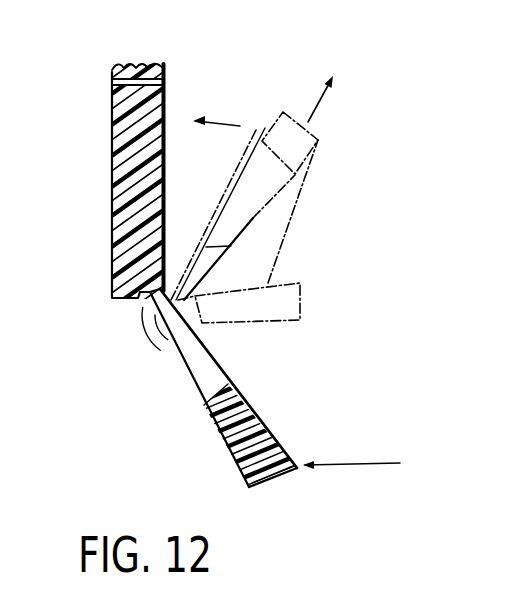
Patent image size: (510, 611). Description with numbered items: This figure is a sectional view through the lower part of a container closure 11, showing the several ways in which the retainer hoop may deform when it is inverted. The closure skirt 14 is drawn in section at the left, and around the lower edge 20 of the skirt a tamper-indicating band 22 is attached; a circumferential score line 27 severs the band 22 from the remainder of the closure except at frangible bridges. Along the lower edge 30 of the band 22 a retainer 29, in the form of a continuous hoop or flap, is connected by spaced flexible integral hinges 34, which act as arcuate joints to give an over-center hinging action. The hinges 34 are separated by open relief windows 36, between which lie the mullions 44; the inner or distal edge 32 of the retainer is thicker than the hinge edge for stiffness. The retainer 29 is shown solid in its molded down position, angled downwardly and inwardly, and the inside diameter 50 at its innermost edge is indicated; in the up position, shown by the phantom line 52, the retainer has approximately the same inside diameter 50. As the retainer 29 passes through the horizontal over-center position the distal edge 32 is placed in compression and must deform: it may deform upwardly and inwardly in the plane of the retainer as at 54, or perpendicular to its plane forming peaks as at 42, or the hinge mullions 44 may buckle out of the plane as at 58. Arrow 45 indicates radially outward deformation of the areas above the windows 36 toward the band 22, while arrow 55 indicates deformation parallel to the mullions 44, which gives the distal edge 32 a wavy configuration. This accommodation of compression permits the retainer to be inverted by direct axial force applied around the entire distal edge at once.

The closure 11 is at (188, 42).
The skirt 14 is at (117, 67).
The lower edge of closure skirt 20 is at (112, 73).
The tamper-indicating band 22 is at (100, 263).
The score line 27 is at (112, 83).
The retainer 29 is at (238, 200).
The lower edge of band 30 is at (112, 136).
The distal edge 32 is at (266, 480).
The hinges 34 is at (152, 300).
The windows 36 is at (207, 387).
The peaks 42 is at (255, 128).
The mullions 44 is at (284, 455).
The arrow 45 is at (207, 122).
The inside diameter 50 is at (327, 472).
The phantom line 52 is at (300, 174).
The in-plane deformation 54 is at (322, 136).
The arrow 55 is at (325, 97).
The mullion buckling 58 is at (158, 345).